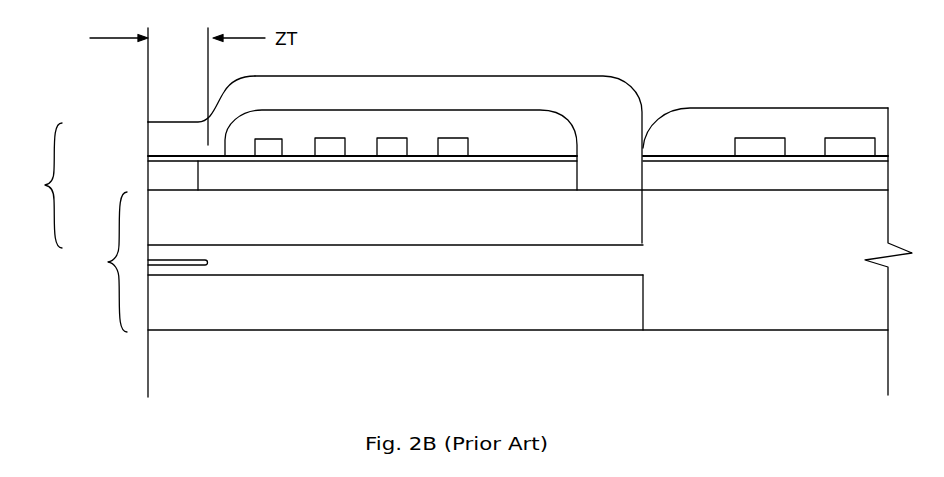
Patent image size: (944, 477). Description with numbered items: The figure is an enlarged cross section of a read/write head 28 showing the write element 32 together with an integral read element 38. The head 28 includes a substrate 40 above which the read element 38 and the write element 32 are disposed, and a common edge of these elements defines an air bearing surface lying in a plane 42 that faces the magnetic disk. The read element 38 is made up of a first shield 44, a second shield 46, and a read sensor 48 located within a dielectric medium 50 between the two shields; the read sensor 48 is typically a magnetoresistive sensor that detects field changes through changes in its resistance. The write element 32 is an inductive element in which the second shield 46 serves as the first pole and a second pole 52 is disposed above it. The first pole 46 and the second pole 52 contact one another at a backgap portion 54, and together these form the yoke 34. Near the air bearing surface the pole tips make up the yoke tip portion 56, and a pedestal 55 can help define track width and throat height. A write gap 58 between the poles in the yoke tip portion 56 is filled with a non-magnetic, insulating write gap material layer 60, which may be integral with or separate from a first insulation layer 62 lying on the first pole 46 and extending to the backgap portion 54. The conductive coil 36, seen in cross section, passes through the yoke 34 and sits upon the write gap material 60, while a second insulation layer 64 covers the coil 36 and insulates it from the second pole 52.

The head 28 is at (72, 309).
The write element 32 is at (38, 185).
The yoke 34 is at (652, 99).
The conductive coil 36 is at (330, 145).
The read element 38 is at (102, 262).
The substrate 40 is at (160, 383).
The plane 42 is at (148, 91).
The first shield 44 is at (312, 310).
The second shield 46 is at (340, 223).
The read sensor 48 is at (173, 264).
The dielectric medium 50 is at (252, 263).
The second pole 52 is at (415, 95).
The backgap portion 54 is at (592, 115).
The pedestal 55 is at (157, 181).
The yoke tip portion 56 is at (159, 141).
The write gap 58 is at (148, 160).
The write gap material layer 60 is at (303, 162).
The first insulation layer 62 is at (541, 178).
The second insulation layer 64 is at (512, 138).